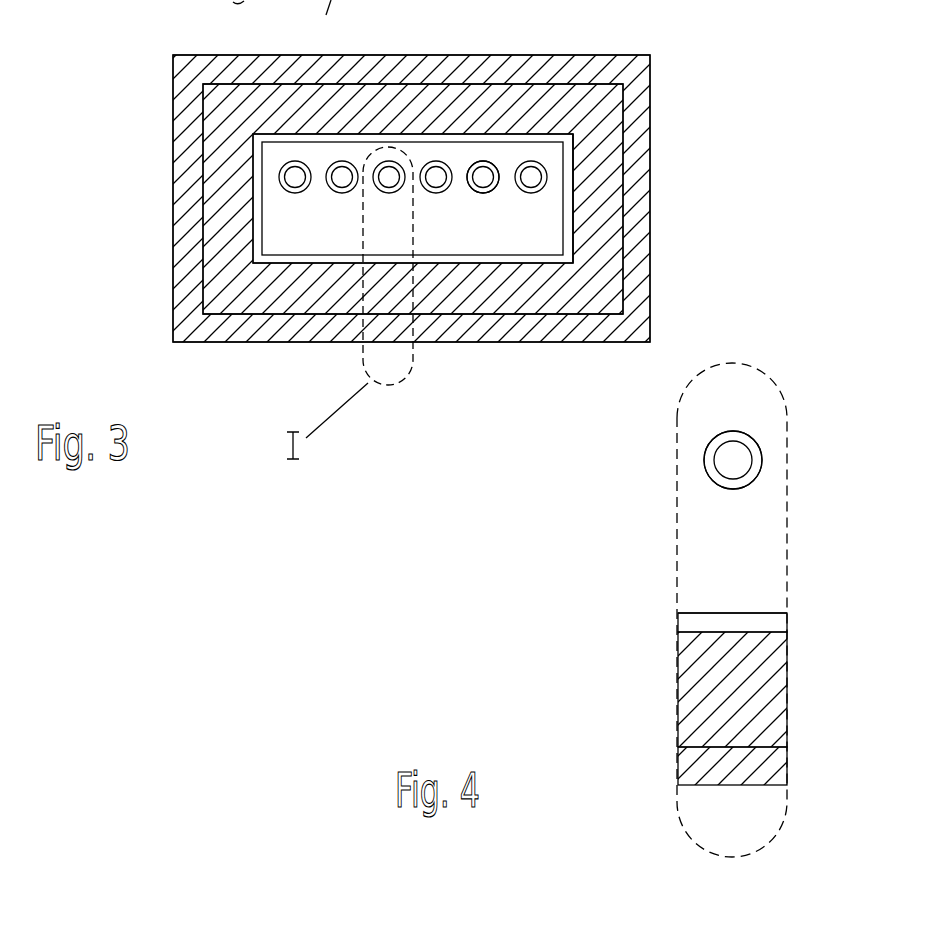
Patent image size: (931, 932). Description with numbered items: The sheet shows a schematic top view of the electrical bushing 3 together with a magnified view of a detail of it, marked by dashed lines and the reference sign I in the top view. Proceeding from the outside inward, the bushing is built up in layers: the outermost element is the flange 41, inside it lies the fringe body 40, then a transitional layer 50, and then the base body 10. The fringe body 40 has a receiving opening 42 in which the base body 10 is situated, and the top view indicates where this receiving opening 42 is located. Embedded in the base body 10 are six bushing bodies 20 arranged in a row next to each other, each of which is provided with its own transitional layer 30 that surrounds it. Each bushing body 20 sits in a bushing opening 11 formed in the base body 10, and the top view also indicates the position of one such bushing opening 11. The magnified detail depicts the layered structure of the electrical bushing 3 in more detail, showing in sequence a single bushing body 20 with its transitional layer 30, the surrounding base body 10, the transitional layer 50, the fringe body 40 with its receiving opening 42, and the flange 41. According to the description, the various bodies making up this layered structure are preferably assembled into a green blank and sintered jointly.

In FIG. 3, the electrical bushing 3 is at (692, 83).
In FIG. 3, the base body 10 is at (273, 222).
In FIG. 4, the base body 10 is at (702, 523).
In FIG. 3, the bushing opening 11 is at (487, 163).
In FIG. 4, the bushing opening 11 is at (750, 488).
In FIG. 3, the bushing body 20 is at (543, 182).
In FIG. 4, the bushing body 20 is at (714, 462).
In FIG. 3, the transitional layer 30 is at (547, 169).
In FIG. 4, the transitional layer 30 is at (704, 448).
In FIG. 3, the fringe body 40 is at (203, 157).
In FIG. 4, the fringe body 40 is at (692, 676).
In FIG. 3, the flange 41 is at (178, 92).
In FIG. 4, the flange 41 is at (690, 772).
In FIG. 3, the receiving opening 42 is at (575, 153).
In FIG. 4, the receiving opening 42 is at (762, 630).
In FIG. 3, the transitional layer 50 is at (252, 187).
In FIG. 4, the transitional layer 50 is at (677, 614).